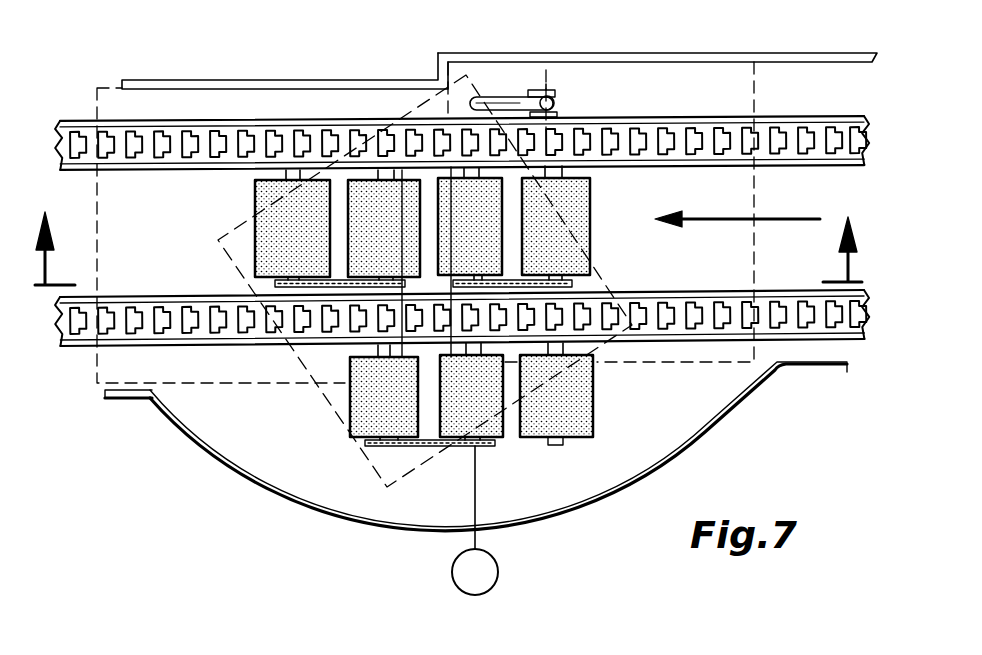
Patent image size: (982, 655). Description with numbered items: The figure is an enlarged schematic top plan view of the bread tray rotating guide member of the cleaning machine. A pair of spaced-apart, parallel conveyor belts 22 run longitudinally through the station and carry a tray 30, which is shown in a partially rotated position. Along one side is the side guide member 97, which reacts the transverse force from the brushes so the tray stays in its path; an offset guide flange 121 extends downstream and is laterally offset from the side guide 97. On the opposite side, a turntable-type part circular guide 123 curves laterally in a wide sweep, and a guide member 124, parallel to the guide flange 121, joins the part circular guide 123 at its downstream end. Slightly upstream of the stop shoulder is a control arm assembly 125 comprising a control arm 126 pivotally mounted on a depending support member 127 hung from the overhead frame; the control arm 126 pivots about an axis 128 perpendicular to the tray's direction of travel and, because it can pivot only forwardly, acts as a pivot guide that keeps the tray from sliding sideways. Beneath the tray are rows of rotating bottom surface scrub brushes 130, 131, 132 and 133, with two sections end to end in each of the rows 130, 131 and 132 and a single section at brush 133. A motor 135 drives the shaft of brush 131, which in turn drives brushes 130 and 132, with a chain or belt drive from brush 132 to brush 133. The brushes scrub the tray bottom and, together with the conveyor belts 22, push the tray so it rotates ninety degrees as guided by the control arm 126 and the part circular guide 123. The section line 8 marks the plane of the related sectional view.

The section line 8- 8 is at (455, 244).
The conveyor belts 22 is at (775, 302).
The tray 30 is at (596, 264).
The side guide member 97 is at (715, 53).
The offset guide flange 121 is at (255, 80).
The part circular guide 123 is at (253, 475).
The guide member 124 is at (108, 400).
The control arm assembly 125 is at (505, 95).
The control arm 126 is at (487, 97).
The depending support member 127 is at (558, 108).
The pivot axis 128 is at (550, 80).
The bottom surface scrub brush 130 is at (578, 240).
The bottom surface scrub brush 131 is at (491, 234).
The bottom surface scrub brush 132 is at (404, 237).
The bottom surface scrub brush 133 is at (312, 240).
The motor 135 is at (498, 560).